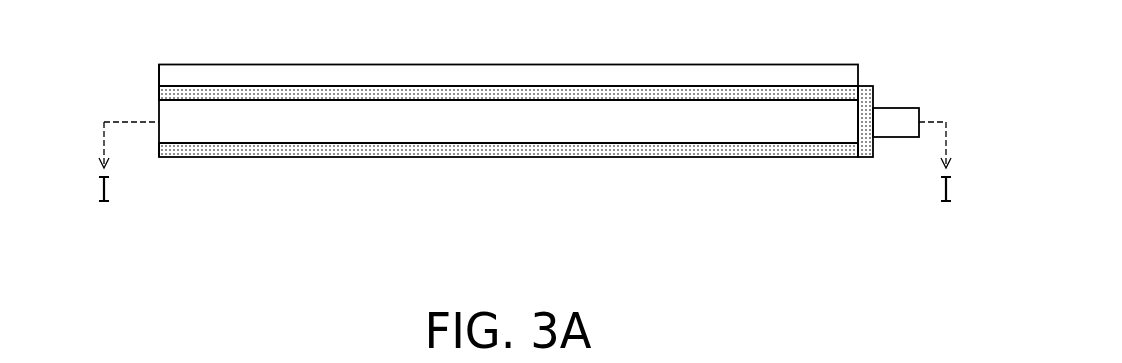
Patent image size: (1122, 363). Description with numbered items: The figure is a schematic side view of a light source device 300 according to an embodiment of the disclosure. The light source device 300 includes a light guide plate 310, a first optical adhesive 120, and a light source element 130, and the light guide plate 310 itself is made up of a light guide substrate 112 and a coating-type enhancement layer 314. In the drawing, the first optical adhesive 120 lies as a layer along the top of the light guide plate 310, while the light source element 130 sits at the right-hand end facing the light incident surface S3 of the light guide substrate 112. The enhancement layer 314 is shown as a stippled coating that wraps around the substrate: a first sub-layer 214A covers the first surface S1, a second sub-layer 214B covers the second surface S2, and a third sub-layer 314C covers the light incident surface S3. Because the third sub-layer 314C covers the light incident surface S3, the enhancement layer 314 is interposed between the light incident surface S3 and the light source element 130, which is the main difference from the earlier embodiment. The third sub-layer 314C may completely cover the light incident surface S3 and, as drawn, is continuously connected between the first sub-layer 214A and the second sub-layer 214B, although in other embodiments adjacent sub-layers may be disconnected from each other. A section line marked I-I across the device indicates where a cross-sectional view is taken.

The light source device 300 is at (518, 161).
The light guide plate 310 is at (516, 183).
The enhancement layer 314 is at (516, 162).
The first sub-layer 214A is at (737, 96).
The second sub-layer 214B is at (780, 149).
The third sub-layer 314C is at (841, 148).
The light guide substrate 112 is at (595, 123).
The first optical adhesive 120 is at (169, 73).
The light source element 130 is at (892, 118).
The first surface S1 is at (351, 111).
The second surface S2 is at (282, 132).
The light incident surface S3 is at (858, 119).